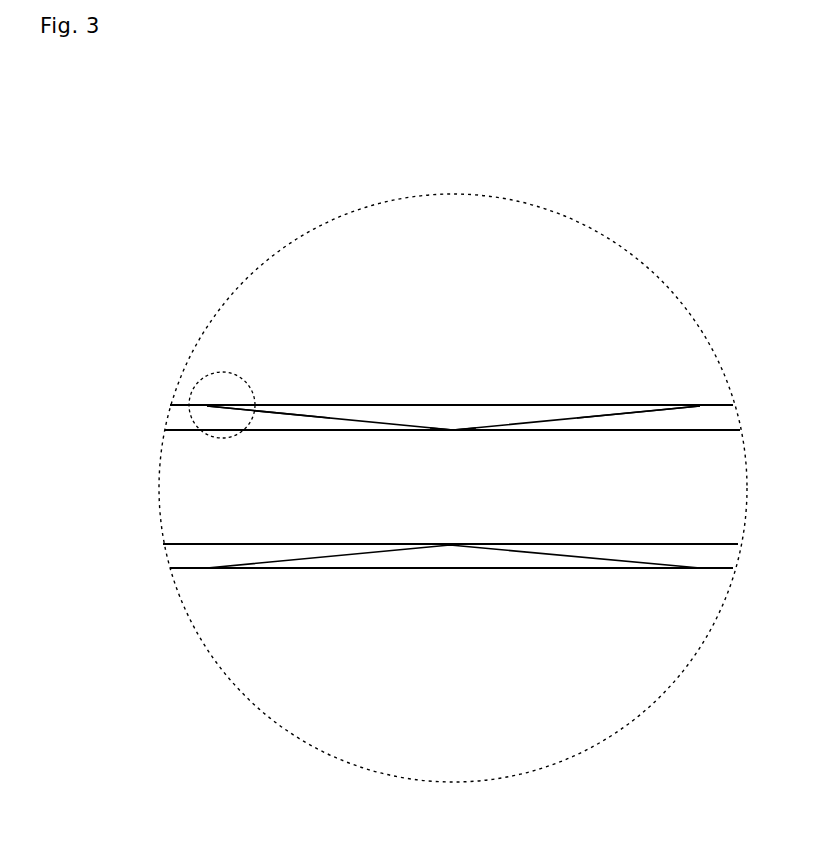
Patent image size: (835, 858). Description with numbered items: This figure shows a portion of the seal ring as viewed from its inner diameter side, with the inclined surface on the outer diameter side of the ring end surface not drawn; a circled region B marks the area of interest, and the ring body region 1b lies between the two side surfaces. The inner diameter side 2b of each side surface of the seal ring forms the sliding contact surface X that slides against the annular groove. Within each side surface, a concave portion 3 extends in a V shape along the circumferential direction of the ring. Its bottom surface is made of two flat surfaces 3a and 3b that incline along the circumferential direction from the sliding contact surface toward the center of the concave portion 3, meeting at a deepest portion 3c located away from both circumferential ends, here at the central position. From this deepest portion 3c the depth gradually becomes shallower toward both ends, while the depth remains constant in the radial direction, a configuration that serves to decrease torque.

The enlarged portion B is at (217, 369).
The base material / core layer 1b is at (180, 490).
The inner diameter side of the side surface 2b is at (718, 405).
The concave portion 3 is at (481, 416).
The flat surface 3a is at (360, 417).
The flat surface 3b is at (575, 417).
The deepest portion 3c is at (453, 430).